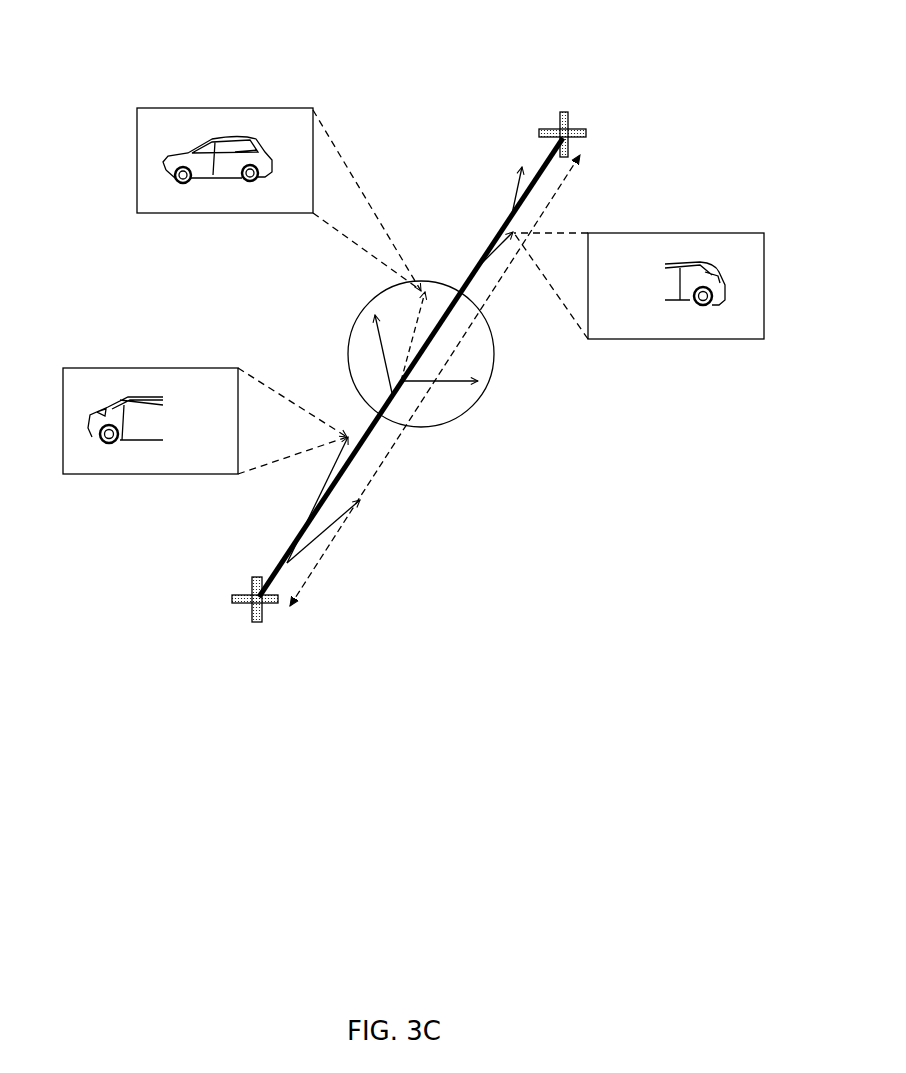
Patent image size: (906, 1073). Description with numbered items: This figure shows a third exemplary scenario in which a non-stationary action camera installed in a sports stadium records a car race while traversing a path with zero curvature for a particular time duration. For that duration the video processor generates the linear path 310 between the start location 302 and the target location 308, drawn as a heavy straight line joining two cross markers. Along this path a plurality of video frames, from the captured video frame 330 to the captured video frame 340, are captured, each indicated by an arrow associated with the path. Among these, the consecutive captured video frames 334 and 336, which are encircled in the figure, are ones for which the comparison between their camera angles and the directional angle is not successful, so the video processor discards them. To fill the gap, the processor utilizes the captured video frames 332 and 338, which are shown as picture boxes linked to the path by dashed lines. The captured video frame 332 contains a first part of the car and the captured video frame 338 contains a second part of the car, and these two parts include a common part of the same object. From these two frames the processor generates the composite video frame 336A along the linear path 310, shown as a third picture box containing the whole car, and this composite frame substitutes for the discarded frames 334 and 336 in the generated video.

The start location 302 is at (247, 595).
The target location 308 is at (586, 133).
The linear path 310 is at (548, 210).
The captured video frame 330 is at (362, 500).
The captured video frame 332 is at (110, 368).
The captured video frame 334 is at (478, 382).
The captured video frame 336 is at (377, 317).
The composite video frame 336A is at (227, 108).
The captured video frame 338 is at (715, 233).
The captured video frame 340 is at (521, 166).